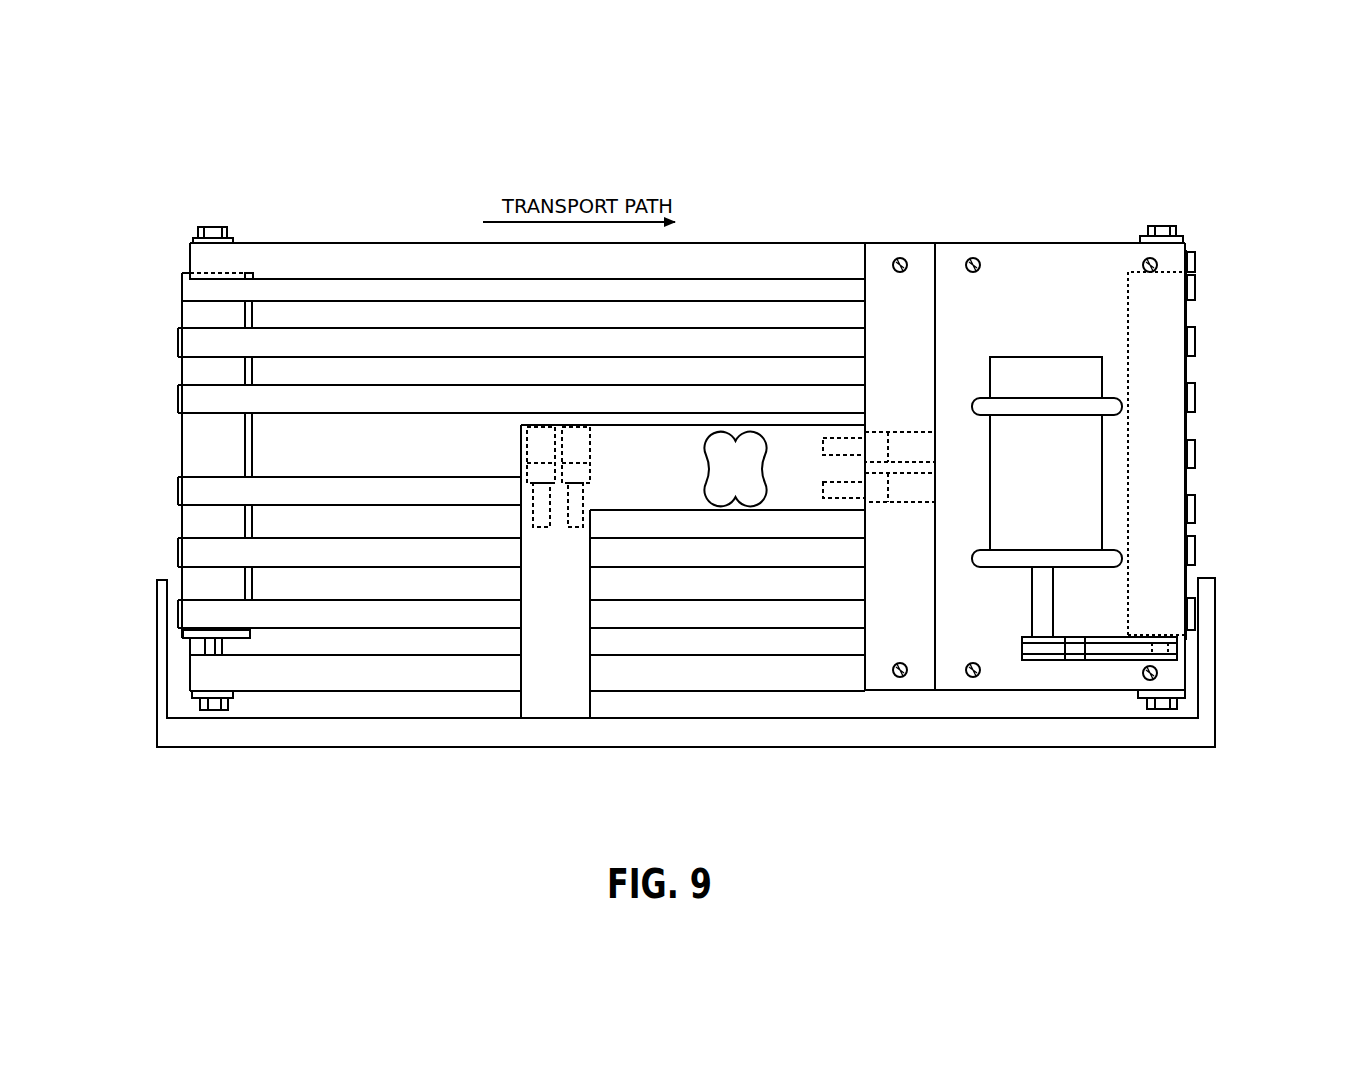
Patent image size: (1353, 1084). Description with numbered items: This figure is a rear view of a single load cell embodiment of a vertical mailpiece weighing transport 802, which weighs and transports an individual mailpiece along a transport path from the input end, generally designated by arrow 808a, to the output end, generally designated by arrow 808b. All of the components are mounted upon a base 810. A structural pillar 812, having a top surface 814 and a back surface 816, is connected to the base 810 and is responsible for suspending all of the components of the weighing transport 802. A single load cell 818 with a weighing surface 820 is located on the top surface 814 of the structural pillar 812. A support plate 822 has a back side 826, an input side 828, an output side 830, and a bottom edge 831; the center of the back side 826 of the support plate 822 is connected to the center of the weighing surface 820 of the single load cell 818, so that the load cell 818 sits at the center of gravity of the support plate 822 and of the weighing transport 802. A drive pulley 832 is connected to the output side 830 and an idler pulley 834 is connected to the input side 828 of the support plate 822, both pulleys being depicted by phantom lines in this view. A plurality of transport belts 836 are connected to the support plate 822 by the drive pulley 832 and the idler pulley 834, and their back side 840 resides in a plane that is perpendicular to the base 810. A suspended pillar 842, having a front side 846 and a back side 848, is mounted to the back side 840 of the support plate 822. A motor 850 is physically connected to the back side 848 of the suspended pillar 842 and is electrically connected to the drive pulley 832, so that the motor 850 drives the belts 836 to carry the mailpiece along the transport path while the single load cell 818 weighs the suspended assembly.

The mailpiece weighing transport 802 is at (1074, 238).
The input end arrow 808a is at (148, 300).
The output end arrow 808b is at (1217, 300).
The base 810 is at (1183, 738).
The structural pillar 812 is at (557, 700).
The top surface 814 is at (521, 510).
The back surface 816 is at (565, 572).
The single load cell 818 is at (668, 453).
The weighing surface 820 is at (818, 510).
The support plate 822 is at (312, 673).
The back side 826 is at (280, 448).
The input side 828 is at (128, 330).
The output side 830 is at (1213, 358).
The bottom edge 831 is at (387, 692).
The drive pulley 832 is at (1182, 240).
The idler pulley 834 is at (233, 243).
The transport belts 836 is at (185, 400).
The back side 840 is at (528, 368).
The suspended pillar 842 is at (1023, 257).
The front side 846 is at (977, 243).
The back side 848 is at (1070, 321).
The motor 850 is at (1085, 455).